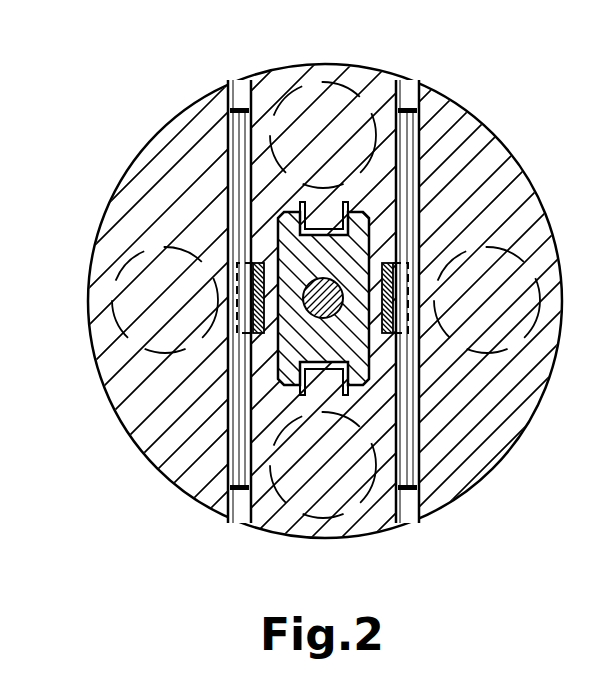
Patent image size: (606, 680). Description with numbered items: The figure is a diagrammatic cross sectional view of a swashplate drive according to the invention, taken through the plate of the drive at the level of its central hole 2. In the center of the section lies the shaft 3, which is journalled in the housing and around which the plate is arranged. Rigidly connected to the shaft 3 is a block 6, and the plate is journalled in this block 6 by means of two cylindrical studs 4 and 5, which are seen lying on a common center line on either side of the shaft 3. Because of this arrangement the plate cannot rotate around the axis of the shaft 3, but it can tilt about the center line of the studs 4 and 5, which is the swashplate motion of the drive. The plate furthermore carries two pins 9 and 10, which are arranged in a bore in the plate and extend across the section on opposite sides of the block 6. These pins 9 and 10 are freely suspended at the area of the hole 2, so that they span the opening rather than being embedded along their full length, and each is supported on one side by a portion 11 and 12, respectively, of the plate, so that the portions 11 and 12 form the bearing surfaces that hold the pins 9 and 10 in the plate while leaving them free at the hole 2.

The hole 2 is at (383, 240).
The shaft 3 is at (332, 303).
The cylindrical stud 4 is at (327, 218).
The cylindrical stud 5 is at (330, 374).
The block 6 is at (357, 260).
The pin 9 is at (407, 131).
The pin 10 is at (235, 145).
The portion of the plate 11 is at (422, 295).
The portion of the plate 12 is at (226, 288).